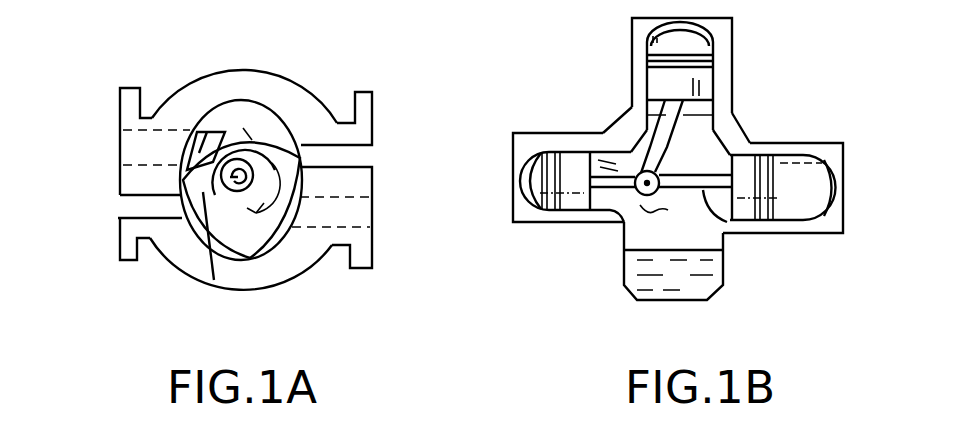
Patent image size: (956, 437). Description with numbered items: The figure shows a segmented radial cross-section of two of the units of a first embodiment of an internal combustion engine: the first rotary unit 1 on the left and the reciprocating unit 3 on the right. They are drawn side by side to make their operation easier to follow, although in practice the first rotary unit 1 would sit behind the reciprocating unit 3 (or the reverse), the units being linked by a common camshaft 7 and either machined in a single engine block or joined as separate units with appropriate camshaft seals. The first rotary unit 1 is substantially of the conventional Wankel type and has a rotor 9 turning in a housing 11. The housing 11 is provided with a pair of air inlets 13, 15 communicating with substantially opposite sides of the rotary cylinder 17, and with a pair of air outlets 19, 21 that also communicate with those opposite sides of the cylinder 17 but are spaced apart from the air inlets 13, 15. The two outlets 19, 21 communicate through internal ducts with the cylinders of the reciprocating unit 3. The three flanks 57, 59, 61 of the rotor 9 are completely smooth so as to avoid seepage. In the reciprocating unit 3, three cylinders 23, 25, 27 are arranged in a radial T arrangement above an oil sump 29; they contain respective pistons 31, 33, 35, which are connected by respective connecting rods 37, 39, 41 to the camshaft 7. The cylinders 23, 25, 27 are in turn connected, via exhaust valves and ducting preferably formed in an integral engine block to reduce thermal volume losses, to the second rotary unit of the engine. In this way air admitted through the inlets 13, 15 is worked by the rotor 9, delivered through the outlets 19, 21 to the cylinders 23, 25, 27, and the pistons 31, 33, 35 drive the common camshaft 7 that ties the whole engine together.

In FIG. 1A, the first rotary unit 1 is at (243, 306).
In FIG. 1B, the reciprocating unit 3 is at (640, 313).
In FIG. 1A, the camshaft 7 is at (185, 255).
In FIG. 1B, the camshaft 7 is at (611, 230).
In FIG. 1A, the rotor 9 is at (278, 145).
In FIG. 1A, the housing 11 is at (293, 263).
In FIG. 1A, the air inlet 13 is at (140, 143).
In FIG. 1A, the air inlet 15 is at (347, 213).
In FIG. 1A, the rotary cylinder 17 is at (218, 115).
In FIG. 1A, the air outlet 19 is at (127, 203).
In FIG. 1A, the air outlet 21 is at (360, 160).
In FIG. 1B, the cylinder 23 is at (520, 226).
In FIG. 1B, the cylinder 25 is at (733, 42).
In FIG. 1B, the cylinder 27 is at (820, 233).
In FIG. 1B, the oil sump 29 is at (697, 292).
In FIG. 1B, the piston 31 is at (572, 163).
In FIG. 1B, the piston 33 is at (663, 80).
In FIG. 1B, the piston 35 is at (752, 140).
In FIG. 1B, the connecting rod 37 is at (612, 158).
In FIG. 1B, the connecting rod 39 is at (733, 113).
In FIG. 1B, the connecting rod 41 is at (727, 230).
In FIG. 1A, the flank 57 is at (248, 132).
In FIG. 1A, the flank 59 is at (295, 243).
In FIG. 1A, the flank 61 is at (210, 283).